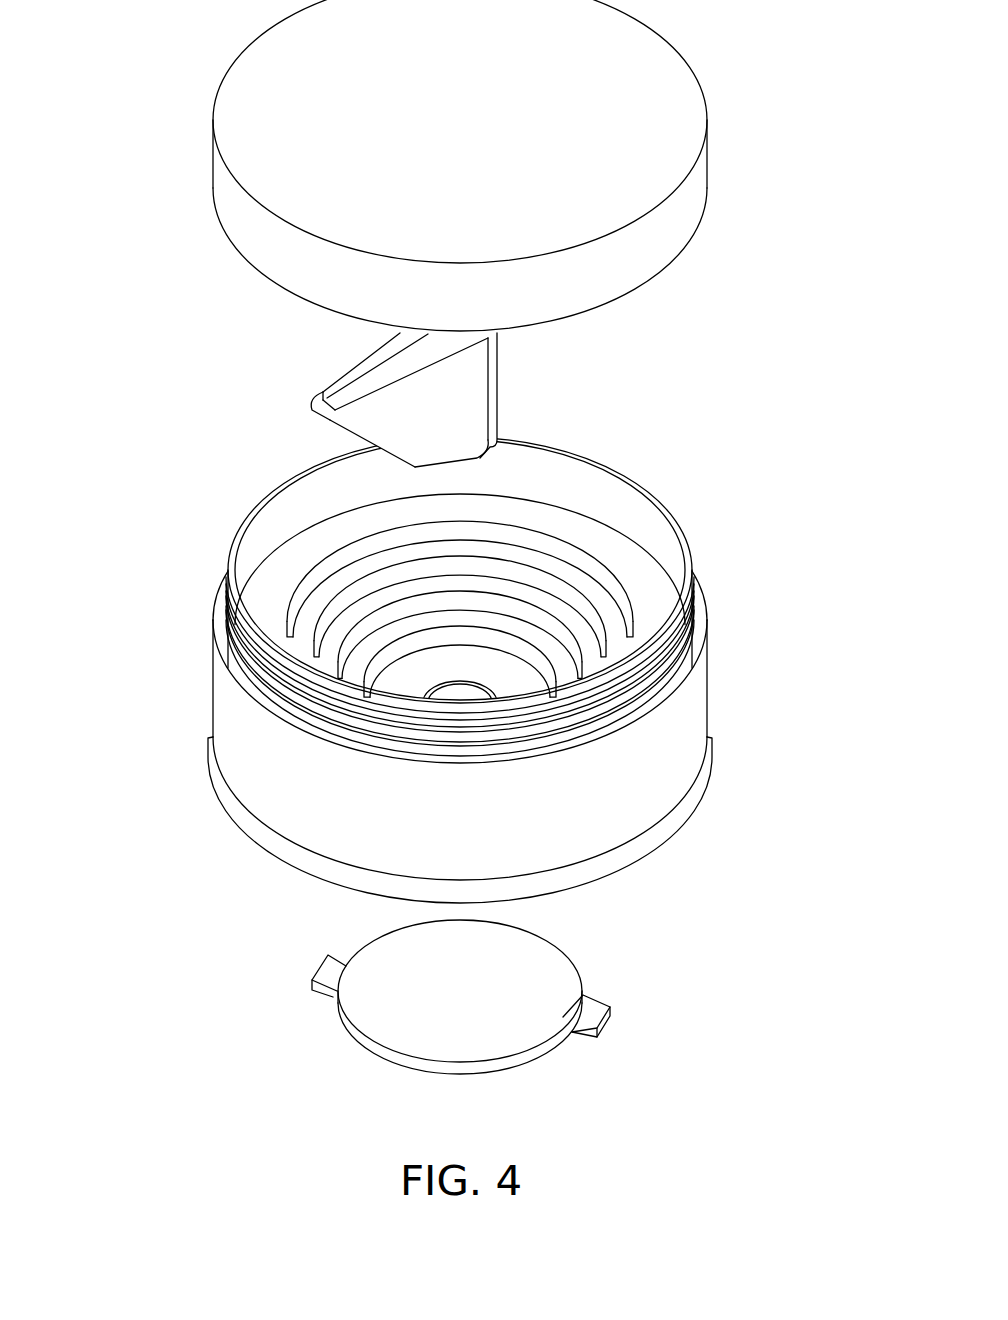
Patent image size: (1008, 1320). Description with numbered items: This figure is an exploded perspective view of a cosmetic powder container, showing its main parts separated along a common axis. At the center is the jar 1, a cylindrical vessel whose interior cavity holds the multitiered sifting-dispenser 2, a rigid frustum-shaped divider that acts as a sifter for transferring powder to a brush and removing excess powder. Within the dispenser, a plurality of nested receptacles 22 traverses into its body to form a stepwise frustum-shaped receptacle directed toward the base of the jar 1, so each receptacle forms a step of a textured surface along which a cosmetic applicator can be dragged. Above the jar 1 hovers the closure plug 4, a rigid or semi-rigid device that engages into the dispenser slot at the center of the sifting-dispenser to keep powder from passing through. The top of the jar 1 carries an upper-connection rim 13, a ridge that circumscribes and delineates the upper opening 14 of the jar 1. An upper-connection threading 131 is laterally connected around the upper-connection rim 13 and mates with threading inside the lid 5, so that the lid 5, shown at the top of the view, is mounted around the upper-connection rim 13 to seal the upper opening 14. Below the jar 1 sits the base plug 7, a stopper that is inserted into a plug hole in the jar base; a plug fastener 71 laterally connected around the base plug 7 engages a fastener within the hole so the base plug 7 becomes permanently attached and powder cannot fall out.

The jar 1 is at (697, 719).
The multitiered sifting-dispenser 2 is at (302, 562).
The closure plug 4 is at (318, 438).
The lid 5 is at (693, 182).
The base plug 7 is at (380, 1052).
The upper-connection rim 13 is at (240, 543).
The upper opening 14 is at (627, 513).
The plurality of nested receptacles 22 is at (505, 612).
The plug fastener 71 is at (592, 1007).
The upper-connection threading 131 is at (242, 656).